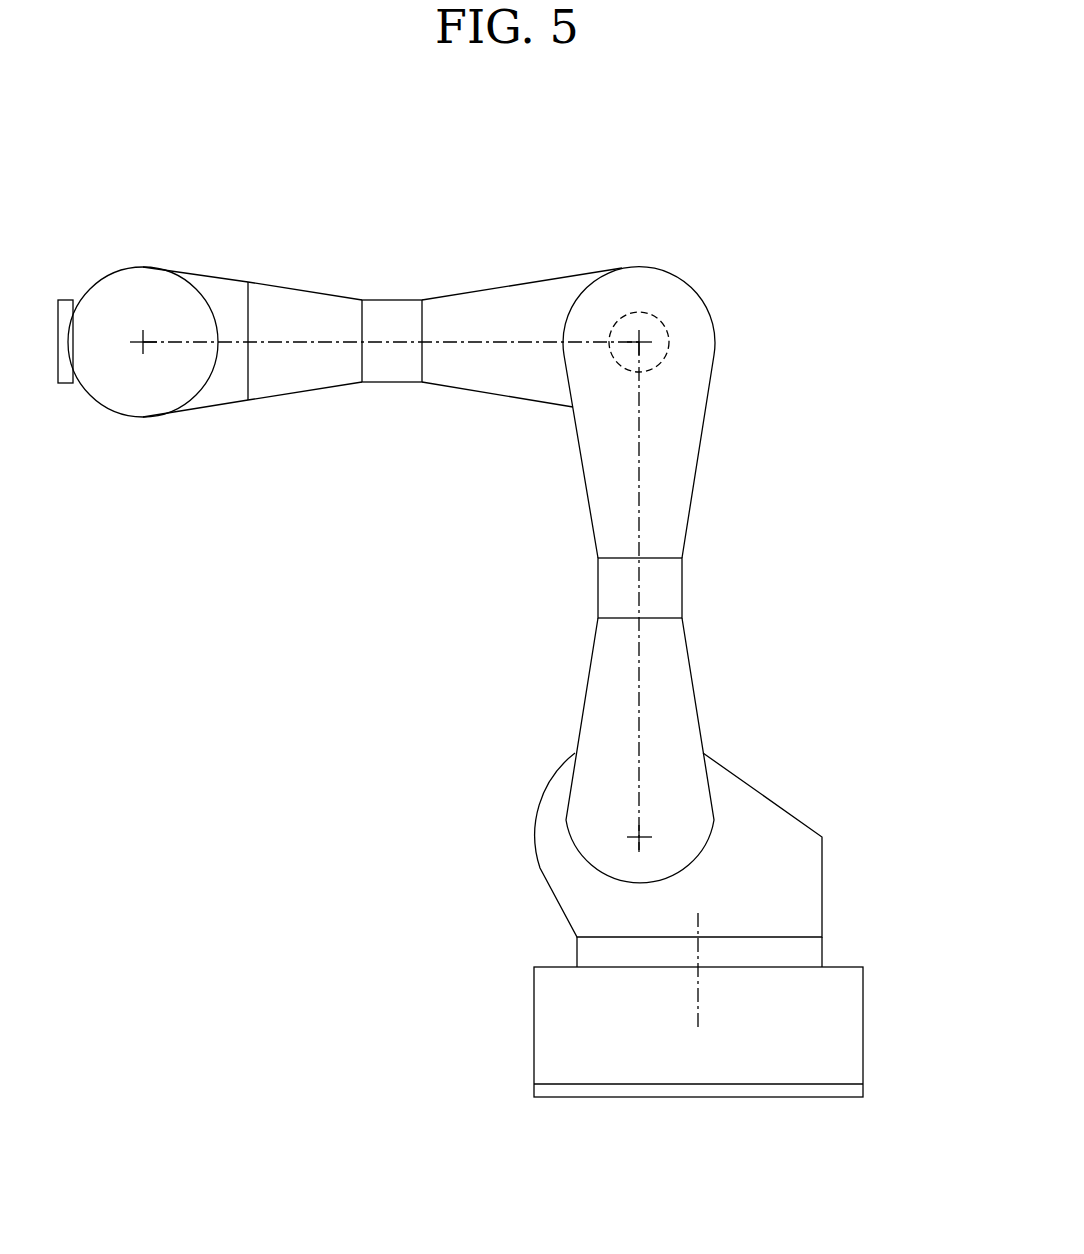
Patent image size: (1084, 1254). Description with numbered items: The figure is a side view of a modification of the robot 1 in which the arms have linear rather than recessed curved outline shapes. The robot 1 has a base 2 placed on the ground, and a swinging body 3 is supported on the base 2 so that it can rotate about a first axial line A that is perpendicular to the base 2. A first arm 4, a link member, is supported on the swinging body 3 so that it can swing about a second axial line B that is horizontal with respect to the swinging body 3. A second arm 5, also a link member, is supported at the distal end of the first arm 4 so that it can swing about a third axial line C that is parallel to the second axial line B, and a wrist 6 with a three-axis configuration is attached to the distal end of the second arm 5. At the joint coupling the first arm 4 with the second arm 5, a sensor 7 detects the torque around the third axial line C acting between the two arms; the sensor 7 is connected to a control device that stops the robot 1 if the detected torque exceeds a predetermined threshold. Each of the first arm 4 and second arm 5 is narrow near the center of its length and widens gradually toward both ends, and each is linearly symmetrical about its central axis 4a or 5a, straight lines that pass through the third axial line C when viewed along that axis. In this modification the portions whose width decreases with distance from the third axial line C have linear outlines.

The robot 1 is at (733, 220).
The base 2 is at (863, 1023).
The swinging body 3 is at (822, 895).
The first arm 4 is at (688, 517).
The central axis 4a is at (640, 438).
The second arm 5 is at (453, 295).
The central axis 5a is at (380, 340).
The wrist 6 is at (139, 254).
The sensor 7 is at (636, 312).
The first axial line A is at (698, 998).
The second axial line B is at (640, 837).
The third axial line C is at (641, 340).